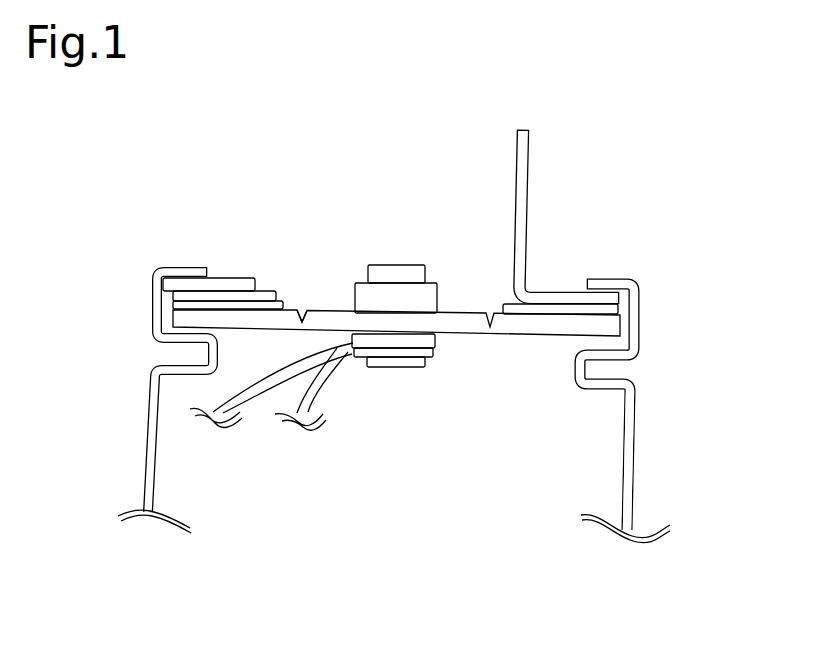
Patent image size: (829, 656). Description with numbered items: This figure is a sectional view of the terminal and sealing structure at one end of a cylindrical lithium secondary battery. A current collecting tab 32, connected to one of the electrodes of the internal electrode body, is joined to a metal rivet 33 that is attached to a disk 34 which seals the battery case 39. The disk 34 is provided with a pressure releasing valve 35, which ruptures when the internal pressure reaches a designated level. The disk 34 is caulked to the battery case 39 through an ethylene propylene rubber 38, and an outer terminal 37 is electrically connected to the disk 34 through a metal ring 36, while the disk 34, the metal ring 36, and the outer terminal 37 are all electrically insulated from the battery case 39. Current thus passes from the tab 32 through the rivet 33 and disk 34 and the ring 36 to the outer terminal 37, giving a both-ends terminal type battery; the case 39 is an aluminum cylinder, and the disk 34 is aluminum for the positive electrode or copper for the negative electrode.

The current collecting tab 32 is at (310, 400).
The metal rivet 33 is at (408, 370).
The disk 34 is at (532, 326).
The pressure releasing valve 35 is at (302, 320).
The metal ring 36 is at (602, 314).
The outer terminal 37 is at (528, 236).
The ethylene propylene rubber 38 is at (628, 294).
The battery case 39 is at (633, 422).